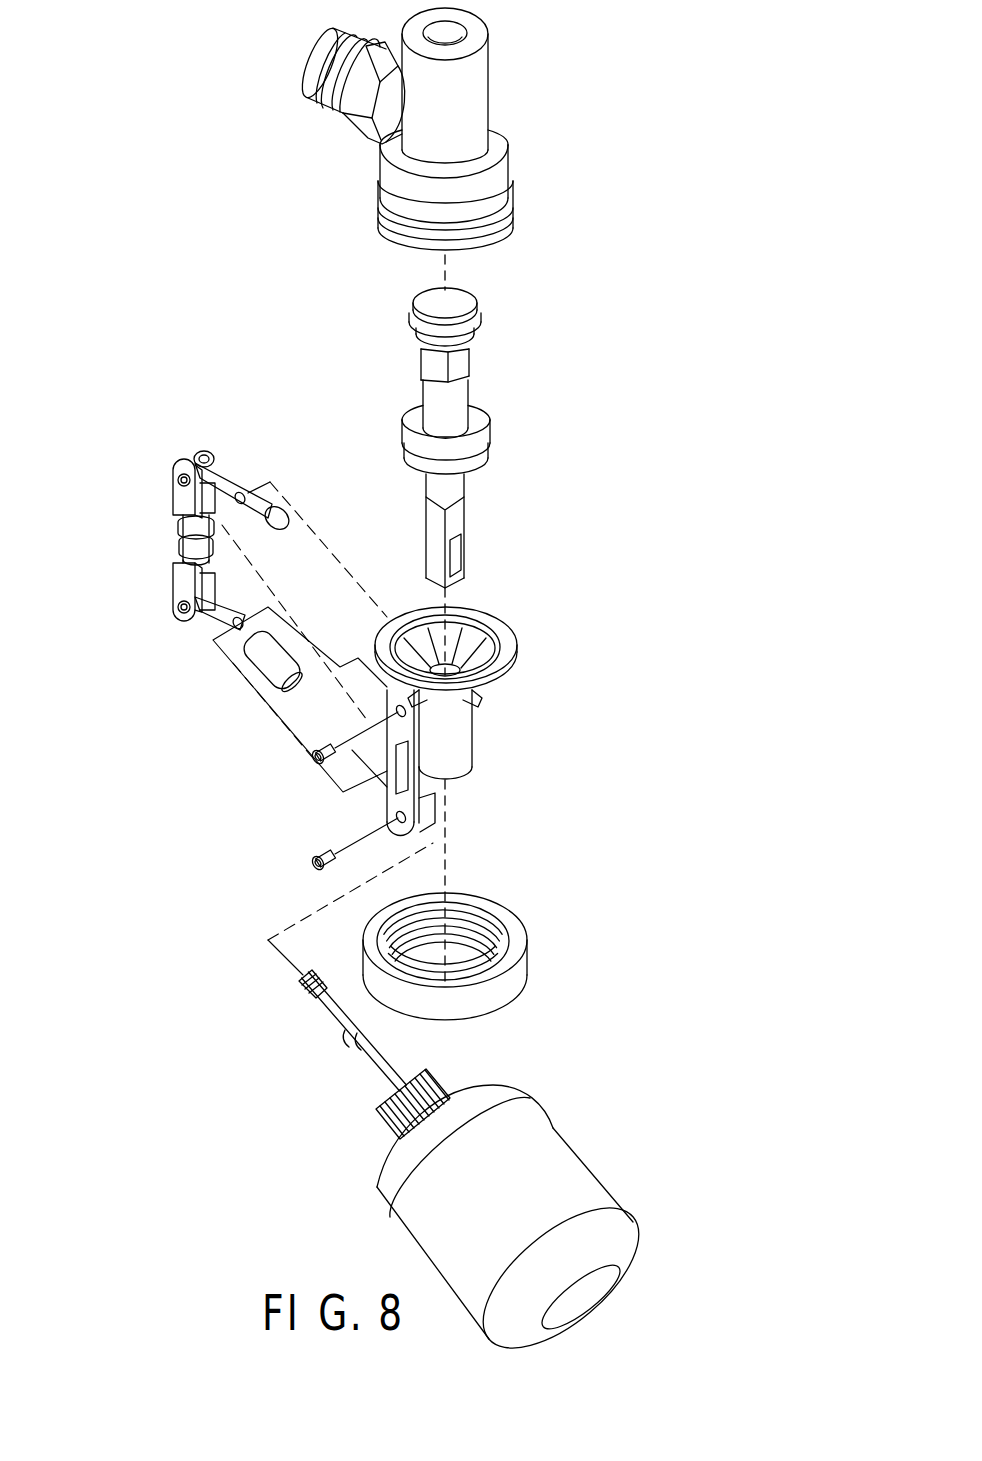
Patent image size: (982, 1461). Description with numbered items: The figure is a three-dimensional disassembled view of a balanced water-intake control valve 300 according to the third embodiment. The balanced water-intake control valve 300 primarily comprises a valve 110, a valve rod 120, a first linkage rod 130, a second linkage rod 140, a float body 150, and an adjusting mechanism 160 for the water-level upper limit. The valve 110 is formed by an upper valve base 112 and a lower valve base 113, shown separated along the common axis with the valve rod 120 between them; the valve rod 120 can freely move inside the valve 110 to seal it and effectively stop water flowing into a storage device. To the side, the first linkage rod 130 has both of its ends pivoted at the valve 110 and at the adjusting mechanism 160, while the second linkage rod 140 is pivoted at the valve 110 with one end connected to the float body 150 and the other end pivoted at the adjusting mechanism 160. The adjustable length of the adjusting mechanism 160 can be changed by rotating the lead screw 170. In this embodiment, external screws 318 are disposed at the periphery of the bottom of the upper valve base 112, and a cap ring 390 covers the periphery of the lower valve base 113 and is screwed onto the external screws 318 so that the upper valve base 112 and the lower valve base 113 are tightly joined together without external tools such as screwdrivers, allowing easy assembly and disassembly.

The balanced water-intake control valve 300 is at (401, 690).
The valve 110 is at (502, 440).
The upper valve base 112 is at (458, 142).
The lower valve base 113 is at (492, 551).
The external screws 318 is at (378, 228).
The valve rod 120 is at (405, 438).
The first linkage rod 130 is at (244, 460).
The second linkage rod 140 is at (208, 659).
The float body 150 is at (480, 1171).
The adjusting mechanism 160 is at (173, 554).
The lead screw 170 is at (128, 544).
The cap ring 390 is at (502, 956).